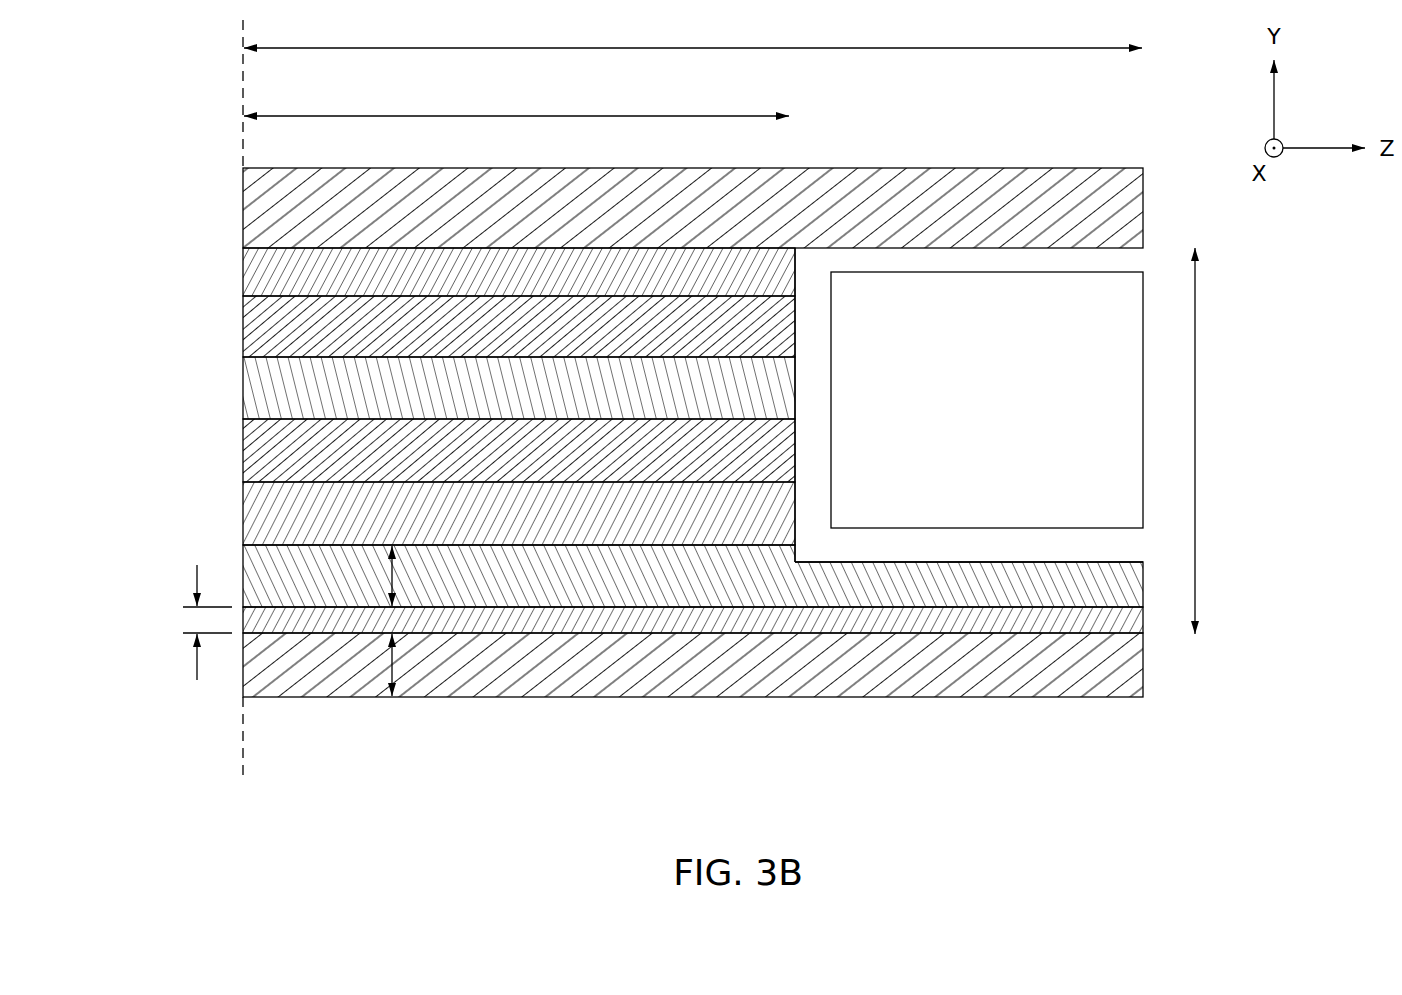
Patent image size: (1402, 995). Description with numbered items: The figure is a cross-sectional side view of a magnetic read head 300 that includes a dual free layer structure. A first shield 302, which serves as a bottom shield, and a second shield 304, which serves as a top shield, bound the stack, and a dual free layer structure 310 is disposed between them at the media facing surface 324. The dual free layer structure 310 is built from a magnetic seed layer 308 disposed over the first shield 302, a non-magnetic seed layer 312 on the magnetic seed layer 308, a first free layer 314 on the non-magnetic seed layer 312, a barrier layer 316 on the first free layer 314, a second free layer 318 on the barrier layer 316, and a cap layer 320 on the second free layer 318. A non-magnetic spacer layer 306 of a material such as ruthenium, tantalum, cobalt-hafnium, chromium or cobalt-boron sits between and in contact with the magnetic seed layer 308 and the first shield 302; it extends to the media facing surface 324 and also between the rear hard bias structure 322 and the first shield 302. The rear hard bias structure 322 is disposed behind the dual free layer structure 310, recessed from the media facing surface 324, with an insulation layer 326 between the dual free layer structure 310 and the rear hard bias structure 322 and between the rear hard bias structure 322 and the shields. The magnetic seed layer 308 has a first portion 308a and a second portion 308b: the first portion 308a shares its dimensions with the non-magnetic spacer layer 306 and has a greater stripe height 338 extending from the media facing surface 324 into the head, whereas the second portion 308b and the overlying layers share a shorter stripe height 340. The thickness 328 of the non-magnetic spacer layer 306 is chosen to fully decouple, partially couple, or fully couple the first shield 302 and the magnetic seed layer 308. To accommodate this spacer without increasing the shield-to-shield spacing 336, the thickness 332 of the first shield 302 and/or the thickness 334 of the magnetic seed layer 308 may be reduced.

The magnetic read head 300 is at (190, 160).
The first shield 302 is at (884, 675).
The second shield 304 is at (885, 221).
The non-magnetic spacer layer 306 is at (831, 633).
The magnetic seed layer 308 is at (693, 572).
The first portion of the magnetic seed layer 308a is at (1013, 573).
The second portion of the magnetic seed layer 308b is at (771, 561).
The dual free layer structure 310 is at (218, 389).
The non-magnetic seed layer 312 is at (653, 524).
The first free layer 314 is at (653, 461).
The barrier layer 316 is at (653, 399).
The second free layer 318 is at (653, 335).
The cap layer 320 is at (653, 283).
The rear hard bias structure 322 is at (968, 451).
The media facing surface 324 is at (238, 435).
The insulation layer 326 is at (927, 558).
The thickness of the non-magnetic spacer layer 328 is at (196, 628).
The thickness of the first shield 332 is at (391, 663).
The thickness of the magnetic seed layer 334 is at (391, 578).
The shield-to-shield spacing 336 is at (1196, 444).
The stripe height of the non-magnetic spacer layer and first portion 338 is at (750, 47).
The stripe height of the second portion and DFL layers 340 is at (400, 115).